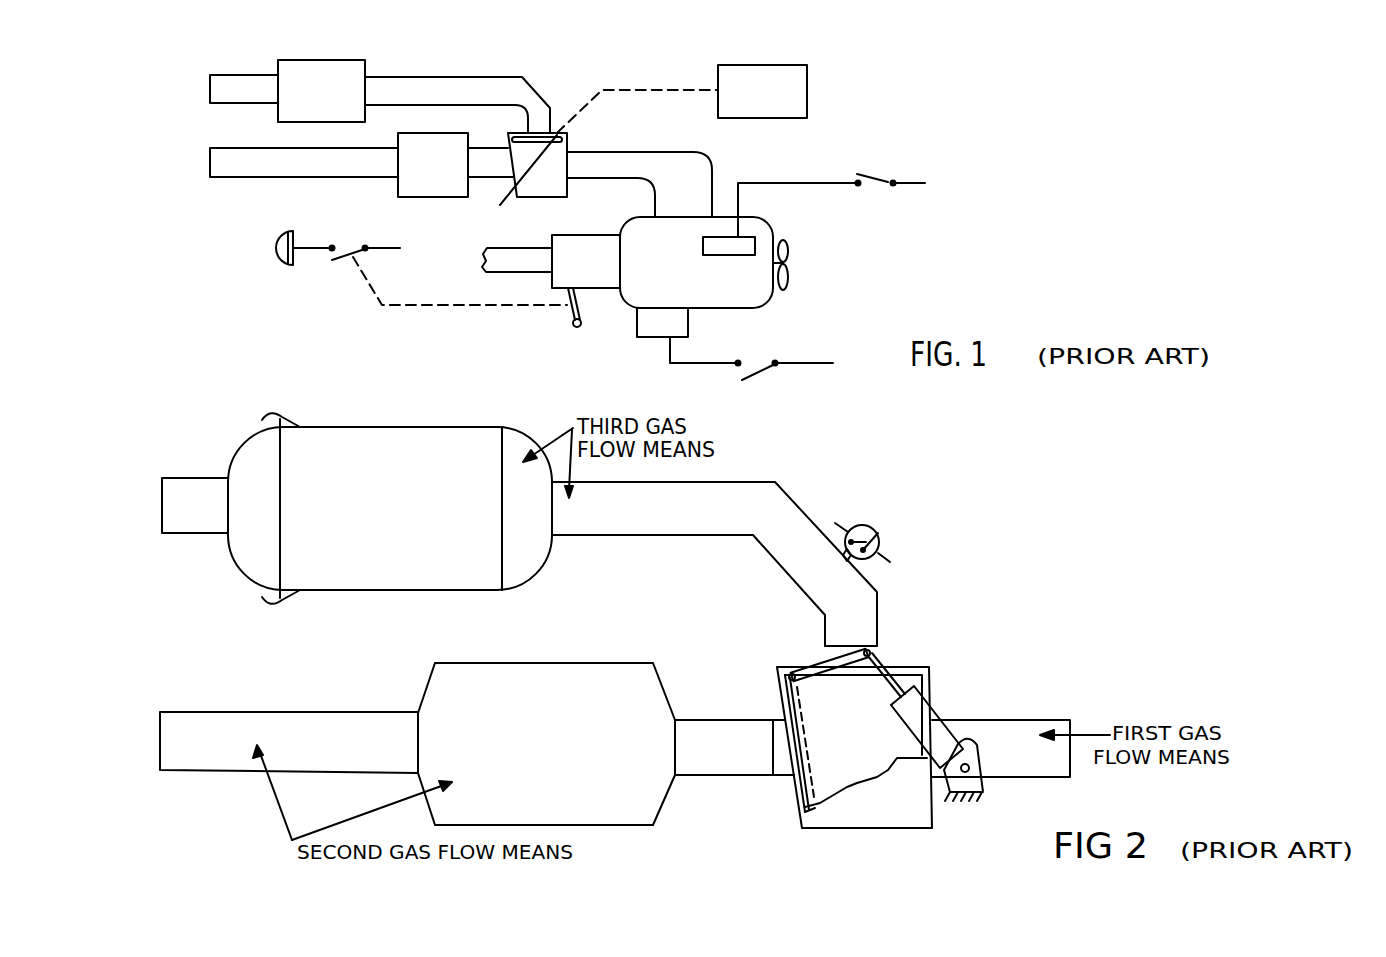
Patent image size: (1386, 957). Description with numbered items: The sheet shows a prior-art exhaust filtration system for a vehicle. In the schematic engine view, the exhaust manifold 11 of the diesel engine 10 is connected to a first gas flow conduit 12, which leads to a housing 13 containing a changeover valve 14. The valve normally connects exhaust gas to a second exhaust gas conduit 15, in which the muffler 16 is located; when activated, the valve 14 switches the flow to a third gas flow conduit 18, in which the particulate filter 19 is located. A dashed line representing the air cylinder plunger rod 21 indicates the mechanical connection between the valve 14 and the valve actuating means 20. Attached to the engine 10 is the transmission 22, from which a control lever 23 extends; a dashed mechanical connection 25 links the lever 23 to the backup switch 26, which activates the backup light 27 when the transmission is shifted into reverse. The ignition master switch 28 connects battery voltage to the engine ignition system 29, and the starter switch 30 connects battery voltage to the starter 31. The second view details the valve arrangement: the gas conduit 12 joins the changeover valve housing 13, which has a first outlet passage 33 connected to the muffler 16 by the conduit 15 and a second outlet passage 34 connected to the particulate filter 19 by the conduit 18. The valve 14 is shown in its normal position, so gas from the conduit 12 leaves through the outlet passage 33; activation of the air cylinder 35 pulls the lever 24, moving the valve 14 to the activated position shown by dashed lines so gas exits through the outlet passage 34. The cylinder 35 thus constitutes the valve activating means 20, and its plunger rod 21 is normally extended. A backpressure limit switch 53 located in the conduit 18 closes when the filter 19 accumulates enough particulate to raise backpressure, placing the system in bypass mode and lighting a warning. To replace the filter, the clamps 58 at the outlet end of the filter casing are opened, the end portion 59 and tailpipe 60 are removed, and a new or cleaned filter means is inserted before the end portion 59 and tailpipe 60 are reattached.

In FIG. 1, the diesel engine 10 is at (773, 232).
In FIG. 1, the exhaust manifold 11 is at (714, 160).
In FIG. 1, the first gas flow conduit 12 is at (590, 151).
In FIG. 2, the first gas flow conduit 12 is at (1017, 720).
In FIG. 1, the changeover valve housing 13 is at (556, 197).
In FIG. 2, the changeover valve housing 13 is at (910, 830).
In FIG. 1, the changeover valve 14 is at (516, 180).
In FIG. 2, the changeover valve 14 is at (868, 687).
In FIG. 1, the second exhaust gas conduit 15 is at (487, 180).
In FIG. 2, the second exhaust gas conduit 15 is at (710, 777).
In FIG. 1, the muffler 16 is at (398, 197).
In FIG. 2, the muffler 16 is at (546, 744).
In FIG. 1, the third gas flow conduit 18 is at (533, 82).
In FIG. 2, the third gas flow conduit 18 is at (800, 512).
In FIG. 1, the particulate filter 19 is at (365, 68).
In FIG. 2, the particulate filter 19 is at (390, 508).
In FIG. 1, the valve actuating means 20 is at (807, 82).
In FIG. 1, the air cylinder plunger rod 21 is at (677, 90).
In FIG. 2, the air cylinder plunger rod 21 is at (887, 667).
In FIG. 1, the transmission 22 is at (566, 235).
In FIG. 1, the control lever 23 is at (570, 318).
In FIG. 2, the lever 24 is at (815, 662).
In FIG. 1, the mechanical connection 25 is at (465, 307).
In FIG. 1, the backup switch 26 is at (347, 258).
In FIG. 1, the backup light 27 is at (280, 260).
In FIG. 1, the ignition master switch 28 is at (870, 173).
In FIG. 1, the engine ignition system 29 is at (732, 257).
In FIG. 1, the starter switch 30 is at (762, 367).
In FIG. 1, the starter 31 is at (658, 338).
In FIG. 2, the first outlet passage 33 is at (785, 777).
In FIG. 2, the second outlet passage 34 is at (877, 648).
In FIG. 2, the air cylinder 35 is at (937, 708).
In FIG. 2, the backpressure limit switch 53 is at (873, 522).
In FIG. 2, the clamps 58 is at (262, 420).
In FIG. 2, the end portion 59 is at (235, 450).
In FIG. 2, the tailpipe 60 is at (213, 533).